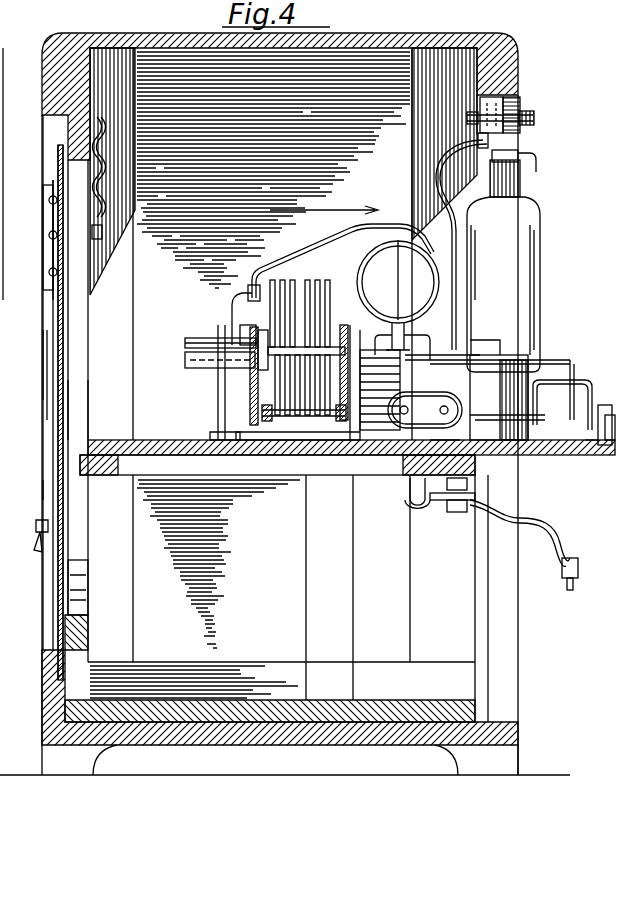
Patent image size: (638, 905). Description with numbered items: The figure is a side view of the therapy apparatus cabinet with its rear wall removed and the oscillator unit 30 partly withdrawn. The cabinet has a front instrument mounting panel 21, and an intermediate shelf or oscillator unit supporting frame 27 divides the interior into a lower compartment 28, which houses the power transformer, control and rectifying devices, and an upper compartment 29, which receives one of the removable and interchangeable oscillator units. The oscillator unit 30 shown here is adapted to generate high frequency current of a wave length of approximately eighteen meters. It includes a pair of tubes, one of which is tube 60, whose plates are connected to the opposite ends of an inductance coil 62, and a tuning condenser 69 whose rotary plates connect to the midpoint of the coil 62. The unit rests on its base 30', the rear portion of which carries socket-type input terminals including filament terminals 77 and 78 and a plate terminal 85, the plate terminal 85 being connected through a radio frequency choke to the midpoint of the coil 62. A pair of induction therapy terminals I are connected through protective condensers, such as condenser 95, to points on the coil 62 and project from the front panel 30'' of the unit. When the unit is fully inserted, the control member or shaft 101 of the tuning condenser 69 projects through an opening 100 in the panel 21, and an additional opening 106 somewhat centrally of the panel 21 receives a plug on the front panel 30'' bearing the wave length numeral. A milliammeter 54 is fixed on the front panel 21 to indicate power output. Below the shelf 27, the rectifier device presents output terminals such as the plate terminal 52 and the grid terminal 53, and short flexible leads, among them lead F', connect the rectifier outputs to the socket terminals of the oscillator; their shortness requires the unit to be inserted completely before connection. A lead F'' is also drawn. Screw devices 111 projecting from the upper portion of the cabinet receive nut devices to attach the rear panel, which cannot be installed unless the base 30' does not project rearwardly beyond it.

The milliammeter 54 is at (45, 229).
The front instrument mounting panel 21 is at (58, 312).
The opening 100 is at (66, 350).
The control member or shaft 101 is at (212, 340).
The induction therapy terminals I is at (190, 358).
The protective condenser 95 is at (250, 321).
The plate terminal 85 is at (2, 378).
The filament terminal 78 is at (2, 400).
The additional opening 106 is at (66, 411).
The oscillator unit 30 is at (333, 284).
The base of the oscillator unit 30' is at (351, 457).
The front panel of the oscillator unit 30'' is at (199, 382).
The intermediate shelf or oscillator unit supporting frame 27 is at (272, 472).
The flexible lead F' is at (22, 490).
The grid terminal 53 is at (35, 528).
The compartment 29 is at (273, 170).
The inductance coil 62 is at (398, 300).
The tube 60 is at (503, 261).
The tuning condenser 69 is at (298, 360).
The screw device 111 is at (515, 112).
The filament terminal 77 is at (606, 448).
The lower compartment 28 is at (218, 564).
The plate terminal 52 is at (460, 512).
The flexible hose F'' is at (524, 545).